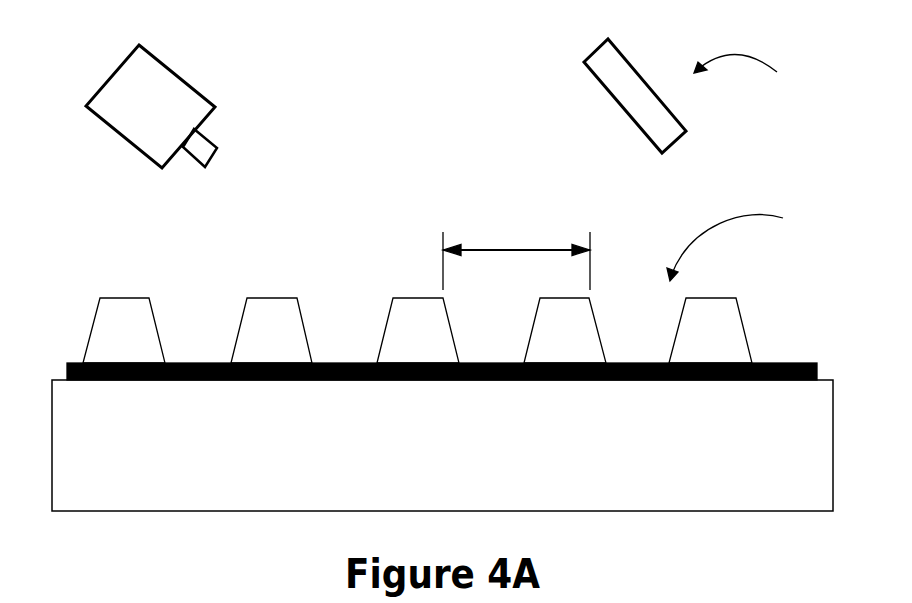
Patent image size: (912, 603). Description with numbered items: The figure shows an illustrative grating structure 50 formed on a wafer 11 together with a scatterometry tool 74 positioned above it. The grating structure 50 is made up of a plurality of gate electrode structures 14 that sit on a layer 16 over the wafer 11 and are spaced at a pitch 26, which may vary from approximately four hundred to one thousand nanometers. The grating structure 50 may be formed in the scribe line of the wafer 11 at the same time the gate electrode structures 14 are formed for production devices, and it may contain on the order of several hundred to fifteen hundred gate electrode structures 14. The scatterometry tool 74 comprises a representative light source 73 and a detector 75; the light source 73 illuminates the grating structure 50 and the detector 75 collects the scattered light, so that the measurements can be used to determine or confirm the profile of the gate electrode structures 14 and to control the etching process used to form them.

The wafer 11 is at (142, 493).
The layer on substrate 16 is at (67, 368).
The gate electrode structures 14 is at (100, 340).
The pitch 26 is at (512, 248).
The grating structure 50 is at (741, 235).
The light source 73 is at (170, 93).
The scatterometry tool 74 is at (754, 67).
The detector 75 is at (627, 90).